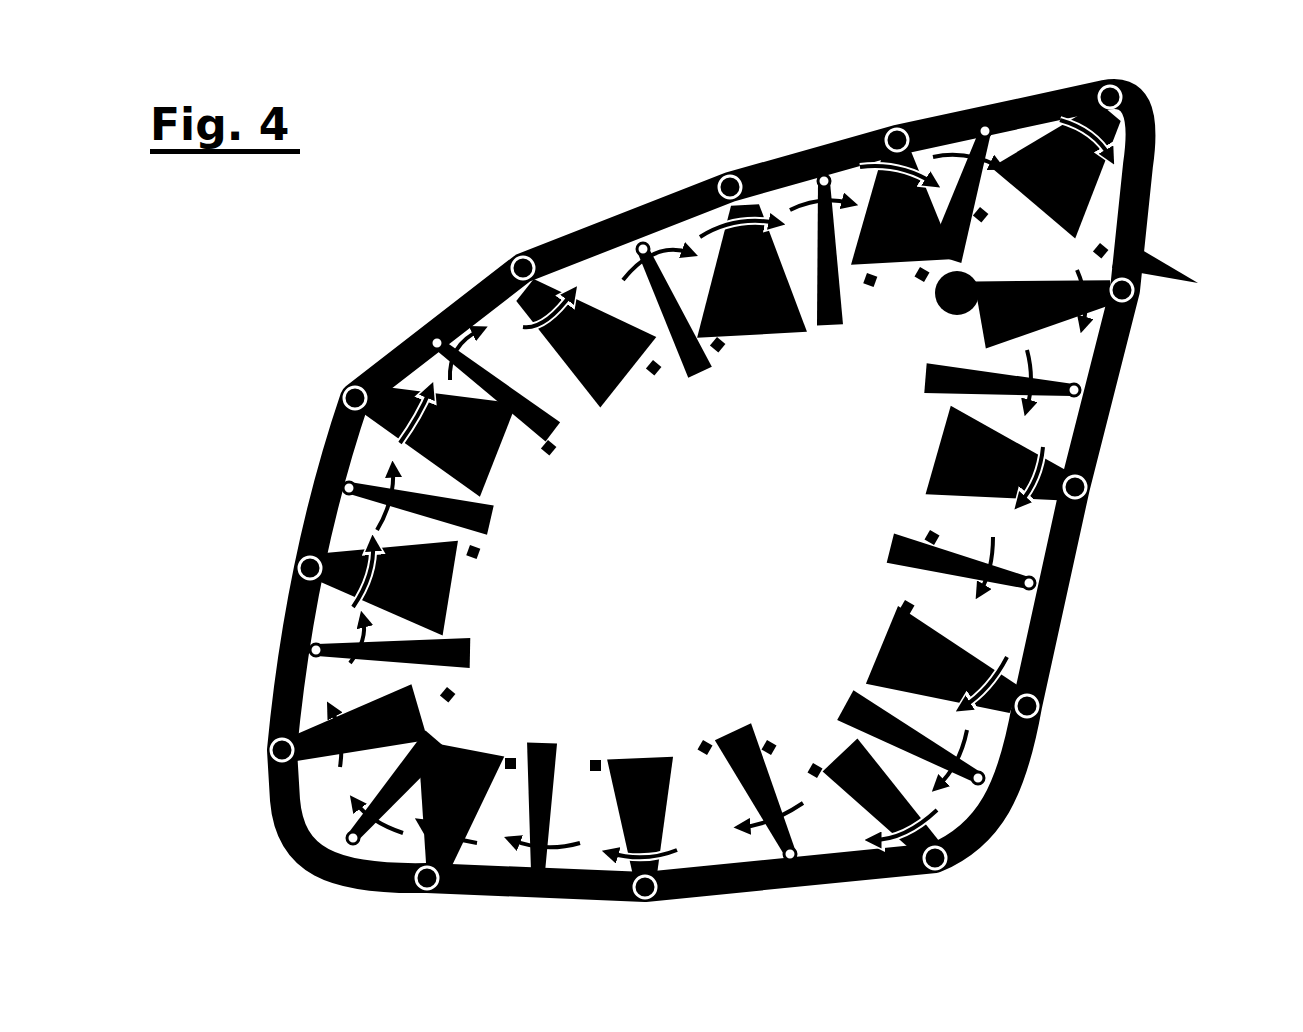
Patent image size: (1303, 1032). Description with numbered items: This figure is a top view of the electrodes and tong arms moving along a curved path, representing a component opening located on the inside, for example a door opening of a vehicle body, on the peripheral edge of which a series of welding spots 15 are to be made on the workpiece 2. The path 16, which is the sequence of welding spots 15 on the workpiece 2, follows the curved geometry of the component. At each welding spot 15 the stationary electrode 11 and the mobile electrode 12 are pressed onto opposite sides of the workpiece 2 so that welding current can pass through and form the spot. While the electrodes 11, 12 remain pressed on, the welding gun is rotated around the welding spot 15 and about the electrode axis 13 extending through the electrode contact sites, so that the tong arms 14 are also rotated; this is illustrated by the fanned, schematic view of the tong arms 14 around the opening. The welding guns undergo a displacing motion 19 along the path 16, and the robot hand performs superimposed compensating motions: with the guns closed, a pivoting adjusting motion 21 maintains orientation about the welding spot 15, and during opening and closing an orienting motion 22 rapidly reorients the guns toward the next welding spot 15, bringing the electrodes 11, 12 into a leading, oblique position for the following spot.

The workpiece 2 is at (664, 490).
The path 16 is at (340, 460).
The stationary electrode 11 is at (781, 498).
The mobile electrode 12 is at (641, 243).
The electrode axis 13 is at (686, 492).
The welding spot 15 is at (522, 258).
The tong arm 14 is at (930, 474).
The displacing motion of welding guns 19 is at (1160, 252).
The adjusting motion 21 is at (716, 236).
The orienting motion 22 is at (800, 215).